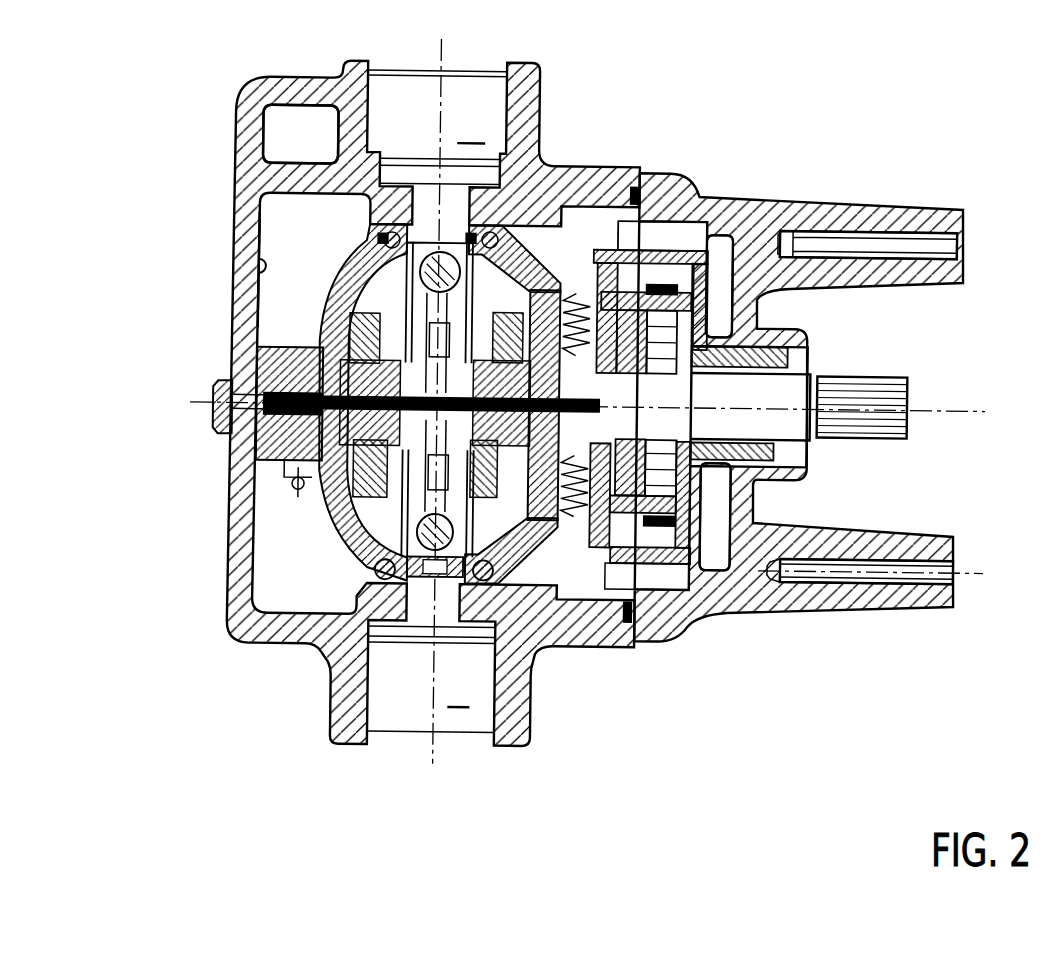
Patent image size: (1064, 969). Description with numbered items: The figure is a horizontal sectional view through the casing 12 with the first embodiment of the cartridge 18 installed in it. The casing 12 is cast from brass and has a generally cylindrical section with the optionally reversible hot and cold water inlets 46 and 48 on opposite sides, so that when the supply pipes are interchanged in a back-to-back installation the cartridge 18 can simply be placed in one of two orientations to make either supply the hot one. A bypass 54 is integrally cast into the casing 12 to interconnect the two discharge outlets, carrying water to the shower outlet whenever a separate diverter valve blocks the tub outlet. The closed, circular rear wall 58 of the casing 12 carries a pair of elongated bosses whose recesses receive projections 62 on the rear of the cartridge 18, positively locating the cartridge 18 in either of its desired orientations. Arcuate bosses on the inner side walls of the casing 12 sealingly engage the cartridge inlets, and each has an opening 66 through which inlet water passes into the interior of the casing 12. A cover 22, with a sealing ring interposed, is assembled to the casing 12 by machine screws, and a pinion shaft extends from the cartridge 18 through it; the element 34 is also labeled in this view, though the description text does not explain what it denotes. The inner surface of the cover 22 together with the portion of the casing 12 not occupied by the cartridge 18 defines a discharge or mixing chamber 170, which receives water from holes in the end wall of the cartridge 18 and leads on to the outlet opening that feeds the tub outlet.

The casing 12 is at (613, 99).
The cartridge 18 is at (316, 530).
The cover 22 is at (685, 190).
The mounting bolt 34 is at (856, 208).
The hot and cold water inlet 46 is at (536, 90).
The hot and cold water inlet 48 is at (534, 692).
The bypass 54 is at (277, 126).
The rear wall 58 is at (260, 260).
The projections 62 is at (222, 387).
The opening 66 is at (420, 204).
The mixing chamber 170 is at (711, 261).